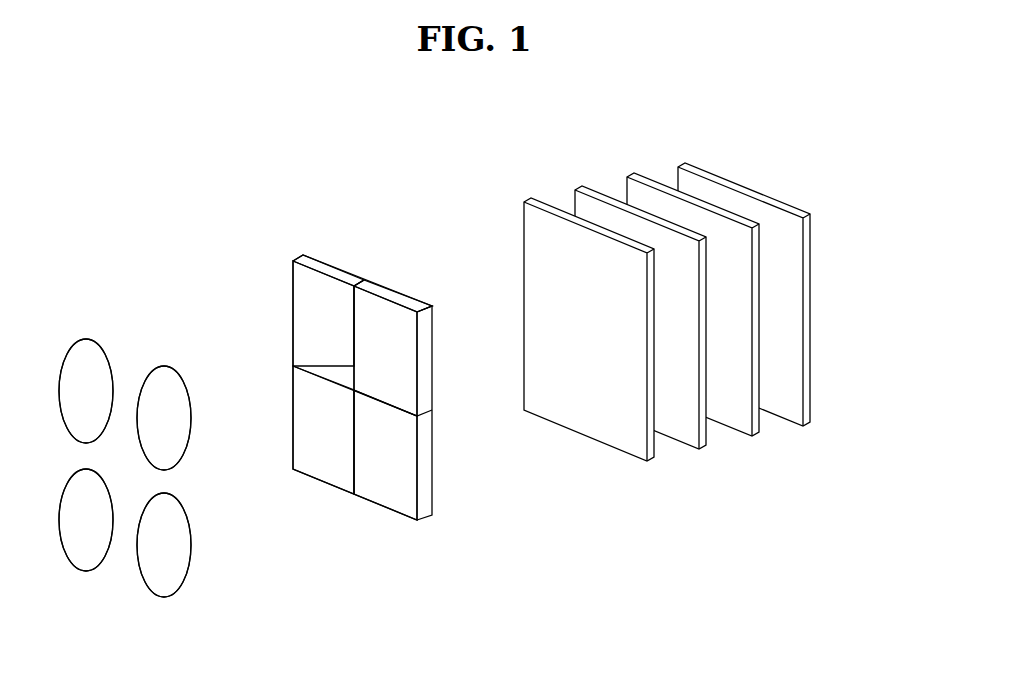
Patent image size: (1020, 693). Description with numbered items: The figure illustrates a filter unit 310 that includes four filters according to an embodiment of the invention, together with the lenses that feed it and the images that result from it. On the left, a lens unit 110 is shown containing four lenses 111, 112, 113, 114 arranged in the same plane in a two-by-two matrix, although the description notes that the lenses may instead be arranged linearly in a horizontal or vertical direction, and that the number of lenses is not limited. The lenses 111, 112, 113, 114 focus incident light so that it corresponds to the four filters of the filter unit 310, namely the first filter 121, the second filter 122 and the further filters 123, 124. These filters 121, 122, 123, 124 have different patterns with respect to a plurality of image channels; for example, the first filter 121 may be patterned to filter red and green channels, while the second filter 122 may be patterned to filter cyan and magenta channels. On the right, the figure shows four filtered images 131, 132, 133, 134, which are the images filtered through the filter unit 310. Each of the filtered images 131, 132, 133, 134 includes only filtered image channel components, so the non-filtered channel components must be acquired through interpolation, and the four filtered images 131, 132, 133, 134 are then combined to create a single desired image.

The lens unit 110 is at (59, 208).
The lens 111 is at (80, 339).
The lens 112 is at (163, 366).
The lens 113 is at (82, 572).
The lens 114 is at (162, 597).
The filter unit 310 is at (292, 155).
The first filter 121 is at (329, 273).
The second filter 122 is at (395, 300).
The filter 123 is at (320, 482).
The filter 124 is at (383, 508).
The filtered image 131 is at (660, 498).
The filtered image 132 is at (713, 483).
The filtered image 133 is at (767, 470).
The filtered image 134 is at (816, 457).